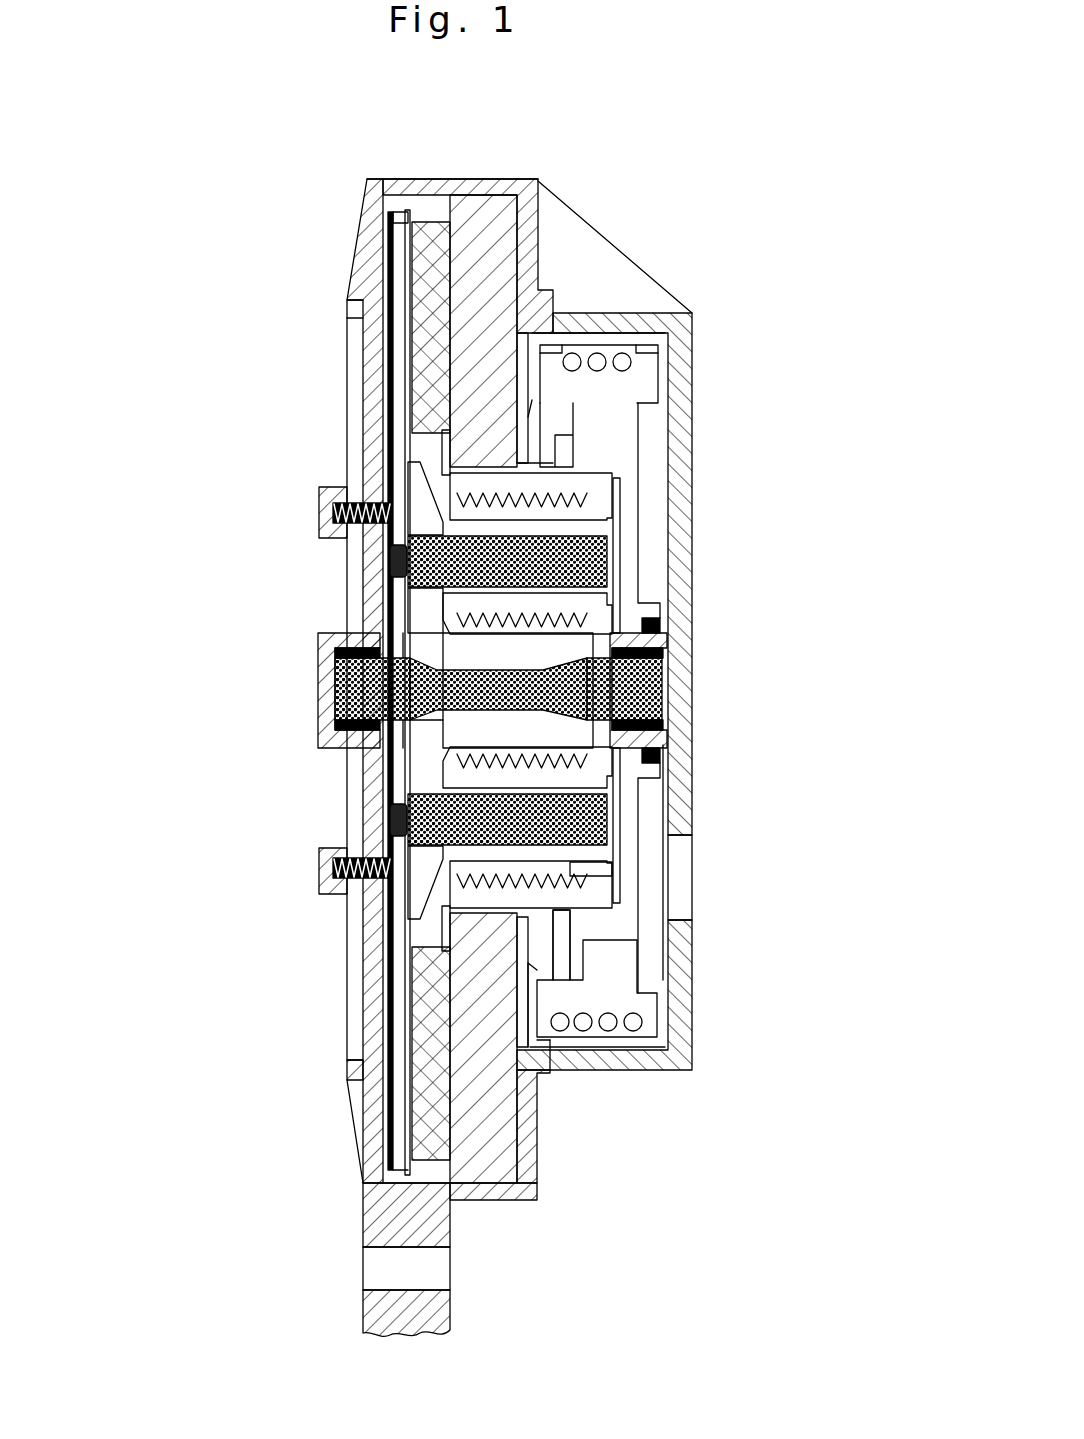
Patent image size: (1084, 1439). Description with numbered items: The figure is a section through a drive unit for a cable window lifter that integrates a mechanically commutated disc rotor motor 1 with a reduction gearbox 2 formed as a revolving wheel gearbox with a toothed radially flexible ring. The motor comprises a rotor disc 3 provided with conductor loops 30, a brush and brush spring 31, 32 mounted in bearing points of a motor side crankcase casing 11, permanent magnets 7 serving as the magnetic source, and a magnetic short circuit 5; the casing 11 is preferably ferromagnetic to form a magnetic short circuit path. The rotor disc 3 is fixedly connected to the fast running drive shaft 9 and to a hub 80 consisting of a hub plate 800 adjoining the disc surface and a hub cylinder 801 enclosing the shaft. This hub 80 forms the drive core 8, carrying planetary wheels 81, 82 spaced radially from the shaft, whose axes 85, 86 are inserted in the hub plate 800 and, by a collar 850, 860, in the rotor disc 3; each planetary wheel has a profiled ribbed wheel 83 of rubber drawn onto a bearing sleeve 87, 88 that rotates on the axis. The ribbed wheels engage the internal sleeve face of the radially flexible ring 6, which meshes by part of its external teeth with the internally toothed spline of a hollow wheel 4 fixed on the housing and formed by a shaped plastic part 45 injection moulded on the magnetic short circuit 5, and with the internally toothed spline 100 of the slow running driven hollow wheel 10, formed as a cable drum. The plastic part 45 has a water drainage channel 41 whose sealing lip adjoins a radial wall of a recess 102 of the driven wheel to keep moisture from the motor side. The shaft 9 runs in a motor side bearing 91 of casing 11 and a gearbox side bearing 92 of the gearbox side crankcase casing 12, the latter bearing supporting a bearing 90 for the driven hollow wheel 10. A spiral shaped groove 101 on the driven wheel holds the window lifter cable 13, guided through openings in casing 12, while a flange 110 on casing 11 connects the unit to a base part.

The mechanically commutated disc rotor motor 1 is at (342, 174).
The reduction gearbox 2 is at (652, 228).
The rotor disc 3 is at (398, 253).
The hollow wheel 4 is at (432, 1003).
The magnetic short circuit 5 is at (481, 1163).
The radially flexible ring 6 is at (632, 517).
The permanent magnets 7 is at (433, 1126).
The drive core 8 is at (435, 770).
The drive shaft 9 is at (368, 692).
The driven hollow wheel 10 is at (602, 400).
The motor side crankcase casing 11 is at (373, 305).
The gearbox side crankcase casing 12 is at (673, 1040).
The window lifter cable 13 is at (572, 362).
The conductor loops 30 is at (393, 397).
The brush 31 is at (335, 513).
The brush spring 32 is at (335, 870).
The water drainage channel 41 is at (558, 973).
The shaped plastic part 45 is at (446, 443).
The hub 80 is at (430, 628).
The planetary wheel 81 is at (610, 558).
The planetary wheel 82 is at (600, 815).
The profiled ribbed wheel 83 is at (580, 870).
The axis 85 is at (443, 565).
The axis 86 is at (470, 822).
The bearing sleeve 87 is at (577, 527).
The bearing sleeve 88 is at (578, 852).
The bearing 90 is at (652, 625).
The motor side bearing 91 is at (437, 731).
The gearbox side bearing 92 is at (652, 752).
The internally toothed spline 100 is at (525, 483).
The spiral shaped groove 101 is at (630, 1030).
The recess 102 is at (565, 443).
The flange 110 is at (395, 1225).
The hub plate 800 is at (432, 905).
The hub cylinder 801 is at (527, 652).
The collar 850 is at (396, 560).
The collar 860 is at (395, 815).